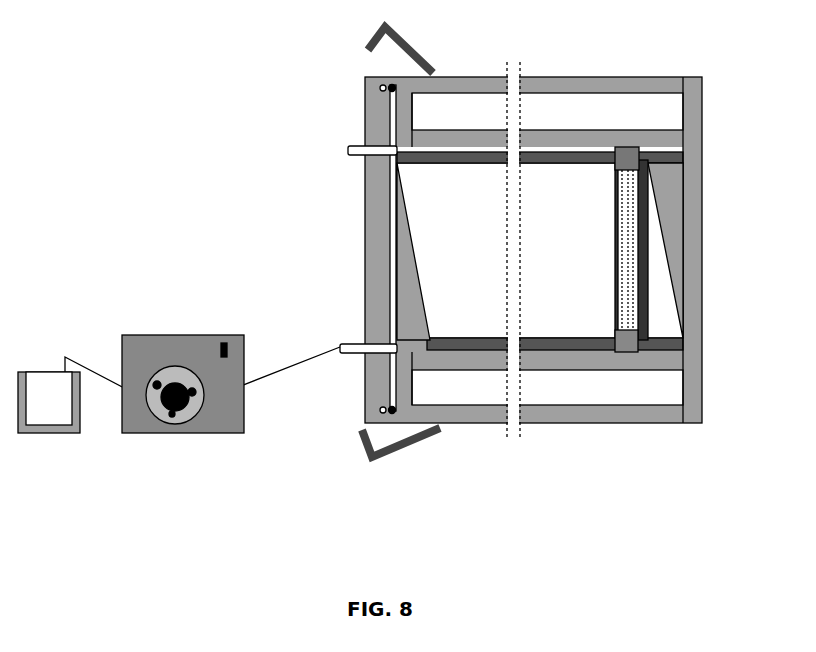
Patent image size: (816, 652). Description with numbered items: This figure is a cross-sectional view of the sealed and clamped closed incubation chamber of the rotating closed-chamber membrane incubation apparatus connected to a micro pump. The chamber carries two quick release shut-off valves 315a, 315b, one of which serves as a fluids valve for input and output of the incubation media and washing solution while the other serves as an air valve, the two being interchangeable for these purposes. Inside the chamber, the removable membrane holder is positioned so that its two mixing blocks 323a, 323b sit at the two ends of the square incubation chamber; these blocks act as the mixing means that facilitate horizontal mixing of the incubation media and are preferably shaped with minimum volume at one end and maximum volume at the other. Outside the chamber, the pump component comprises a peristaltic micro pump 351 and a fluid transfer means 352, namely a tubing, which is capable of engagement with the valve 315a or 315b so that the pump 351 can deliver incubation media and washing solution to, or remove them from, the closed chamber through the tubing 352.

The quick release shut-off valve 315a is at (337, 136).
The quick release shut-off valve 315b is at (337, 327).
The mixing block 323a is at (378, 252).
The mixing block 323b is at (670, 206).
The pump 351 is at (182, 447).
The fluid transfer means 352 is at (302, 372).